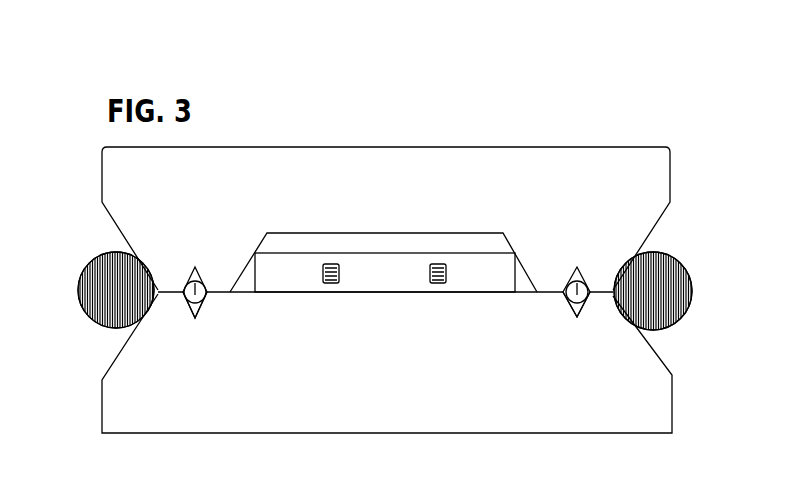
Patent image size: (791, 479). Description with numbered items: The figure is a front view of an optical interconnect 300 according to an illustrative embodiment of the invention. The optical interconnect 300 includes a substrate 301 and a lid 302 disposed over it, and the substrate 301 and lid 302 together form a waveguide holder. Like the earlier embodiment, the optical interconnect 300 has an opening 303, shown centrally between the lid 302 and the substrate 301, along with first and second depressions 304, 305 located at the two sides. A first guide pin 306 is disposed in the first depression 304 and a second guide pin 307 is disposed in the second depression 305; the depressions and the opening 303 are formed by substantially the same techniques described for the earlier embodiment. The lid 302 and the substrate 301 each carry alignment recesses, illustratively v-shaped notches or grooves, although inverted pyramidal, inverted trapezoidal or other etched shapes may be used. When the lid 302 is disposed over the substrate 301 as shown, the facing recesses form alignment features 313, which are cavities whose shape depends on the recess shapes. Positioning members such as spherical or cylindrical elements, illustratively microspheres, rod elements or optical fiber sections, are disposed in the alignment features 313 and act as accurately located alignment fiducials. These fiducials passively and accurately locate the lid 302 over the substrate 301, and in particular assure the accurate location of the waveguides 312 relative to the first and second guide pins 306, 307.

The optical interconnect 300 is at (751, 90).
The substrate 301 is at (657, 345).
The lid 302 is at (665, 183).
The opening 303 is at (490, 248).
The first depression 304 is at (706, 290).
The second depression 305 is at (70, 301).
The first guide pin 306 is at (682, 262).
The second guide pin 307 is at (82, 265).
The waveguides 312 is at (448, 264).
The alignment features 313 is at (212, 288).